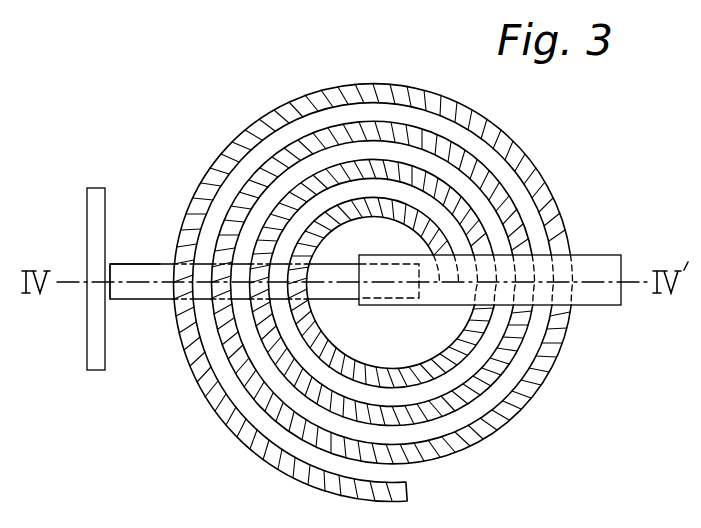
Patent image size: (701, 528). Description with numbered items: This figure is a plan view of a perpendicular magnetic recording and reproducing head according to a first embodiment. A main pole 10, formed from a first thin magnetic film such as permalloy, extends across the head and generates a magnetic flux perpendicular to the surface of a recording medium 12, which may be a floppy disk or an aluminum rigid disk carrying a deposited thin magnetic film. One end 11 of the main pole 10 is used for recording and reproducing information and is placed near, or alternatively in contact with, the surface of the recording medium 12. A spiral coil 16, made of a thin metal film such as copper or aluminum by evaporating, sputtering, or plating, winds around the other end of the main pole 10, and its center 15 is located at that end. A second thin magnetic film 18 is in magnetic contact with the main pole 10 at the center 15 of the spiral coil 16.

The main pole 10 is at (149, 300).
The end of main pole 11 is at (121, 263).
The recording medium 12 is at (97, 372).
The center of spiral coil 15 is at (388, 280).
The spiral coil 16 is at (398, 84).
The second thin magnetic film 18 is at (604, 268).